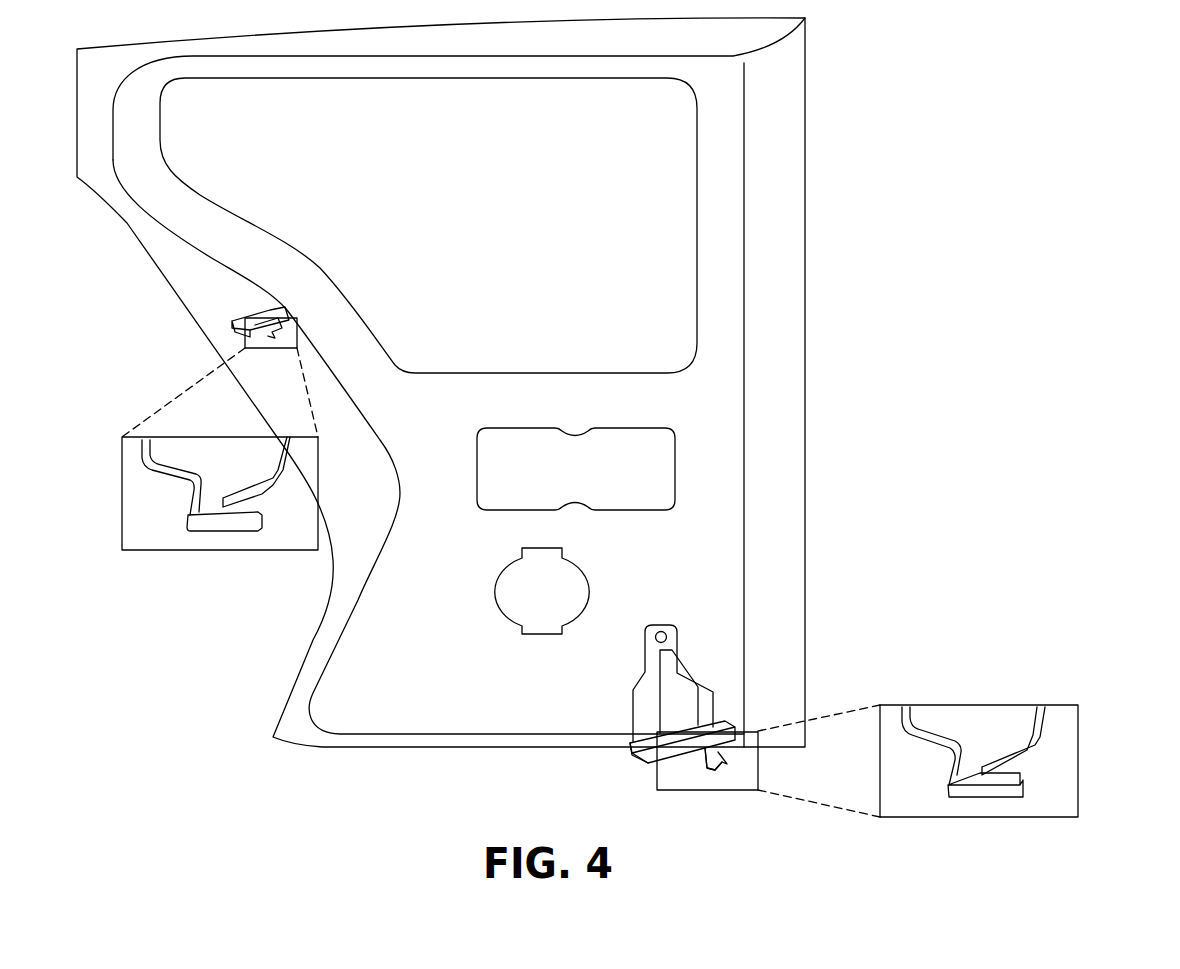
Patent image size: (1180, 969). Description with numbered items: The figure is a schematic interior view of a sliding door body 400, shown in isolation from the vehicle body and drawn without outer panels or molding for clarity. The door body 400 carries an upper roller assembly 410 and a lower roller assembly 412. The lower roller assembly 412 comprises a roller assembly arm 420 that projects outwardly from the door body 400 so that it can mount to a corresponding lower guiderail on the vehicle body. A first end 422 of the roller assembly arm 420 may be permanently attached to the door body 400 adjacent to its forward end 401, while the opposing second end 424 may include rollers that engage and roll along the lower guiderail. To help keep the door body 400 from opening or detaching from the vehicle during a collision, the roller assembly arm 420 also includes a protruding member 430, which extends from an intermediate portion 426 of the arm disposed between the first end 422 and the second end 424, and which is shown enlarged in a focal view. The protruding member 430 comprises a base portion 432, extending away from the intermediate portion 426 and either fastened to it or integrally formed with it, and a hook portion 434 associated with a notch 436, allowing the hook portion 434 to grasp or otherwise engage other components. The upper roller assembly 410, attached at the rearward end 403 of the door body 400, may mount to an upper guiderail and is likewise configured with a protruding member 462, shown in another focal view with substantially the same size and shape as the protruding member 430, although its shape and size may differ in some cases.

The sliding door body 400 is at (782, 272).
The forward end 401 is at (782, 515).
The rearward end 403 is at (203, 283).
The upper roller assembly 410 is at (264, 312).
The lower roller assembly 412 is at (686, 720).
The roller assembly arm 420 is at (670, 745).
The first end 422 is at (727, 732).
The second end 424 is at (622, 760).
The intermediate portion 426 is at (686, 799).
The protruding member 430 is at (1047, 733).
The base portion 432 is at (987, 722).
The hook portion 434 is at (983, 793).
The notch 436 is at (1032, 762).
The protruding member 462 is at (213, 533).